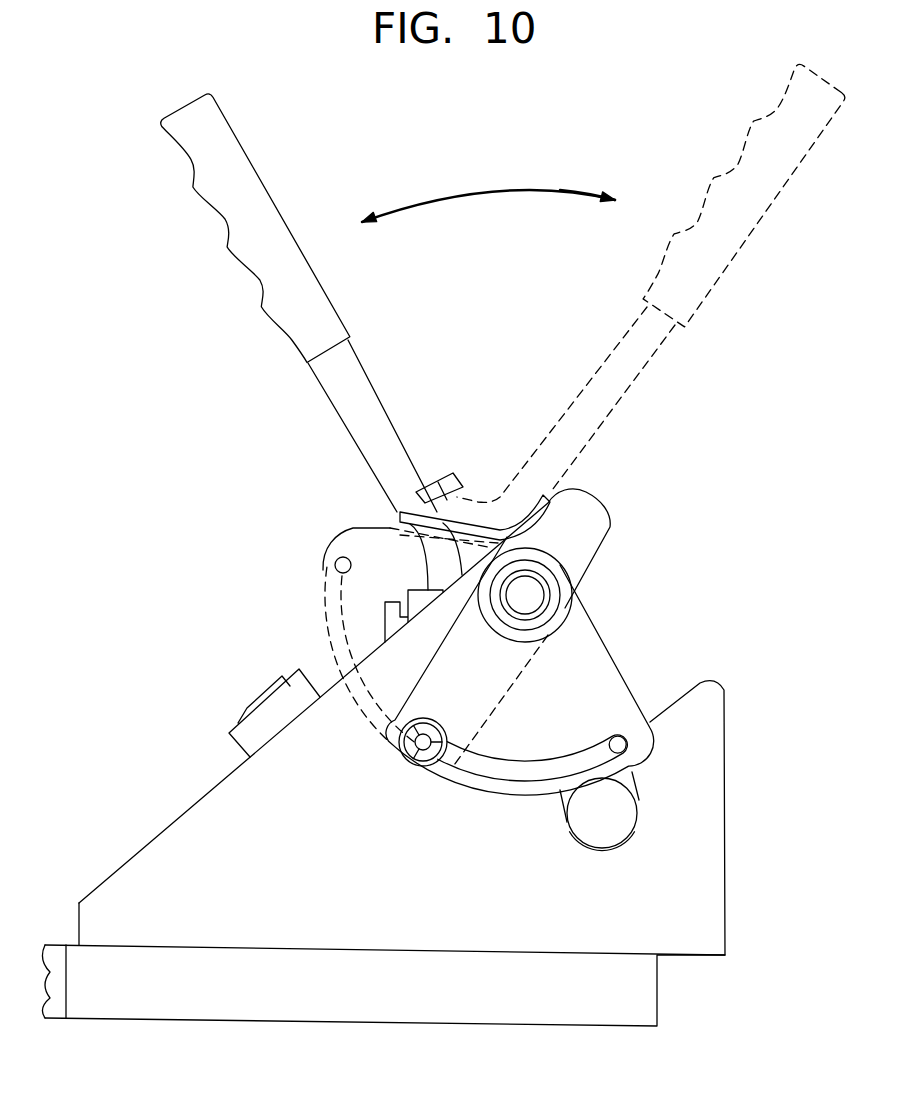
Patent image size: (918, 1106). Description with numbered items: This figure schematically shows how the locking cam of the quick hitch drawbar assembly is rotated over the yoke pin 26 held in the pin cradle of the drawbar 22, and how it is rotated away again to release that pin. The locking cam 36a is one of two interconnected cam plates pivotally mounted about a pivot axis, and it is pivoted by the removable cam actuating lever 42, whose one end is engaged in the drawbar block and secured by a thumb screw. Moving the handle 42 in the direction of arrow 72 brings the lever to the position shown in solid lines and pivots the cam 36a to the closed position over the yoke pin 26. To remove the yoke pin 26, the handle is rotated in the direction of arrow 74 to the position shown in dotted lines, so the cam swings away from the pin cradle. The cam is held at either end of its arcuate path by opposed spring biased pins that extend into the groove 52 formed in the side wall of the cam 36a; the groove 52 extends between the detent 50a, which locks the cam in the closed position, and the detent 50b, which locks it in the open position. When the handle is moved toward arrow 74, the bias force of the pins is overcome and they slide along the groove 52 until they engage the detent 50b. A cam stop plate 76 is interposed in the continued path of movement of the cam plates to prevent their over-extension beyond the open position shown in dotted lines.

The removable cam actuating lever 42 is at (265, 205).
The arrow 72 is at (365, 224).
The arrow 74 is at (604, 202).
The cam stop plate 76 is at (465, 528).
The detent 50a is at (337, 563).
The locking cam 36a is at (588, 650).
The detent 50b is at (610, 735).
The groove 52 is at (502, 773).
The yoke pin 26 is at (602, 828).
The drawbar 22 is at (750, 876).